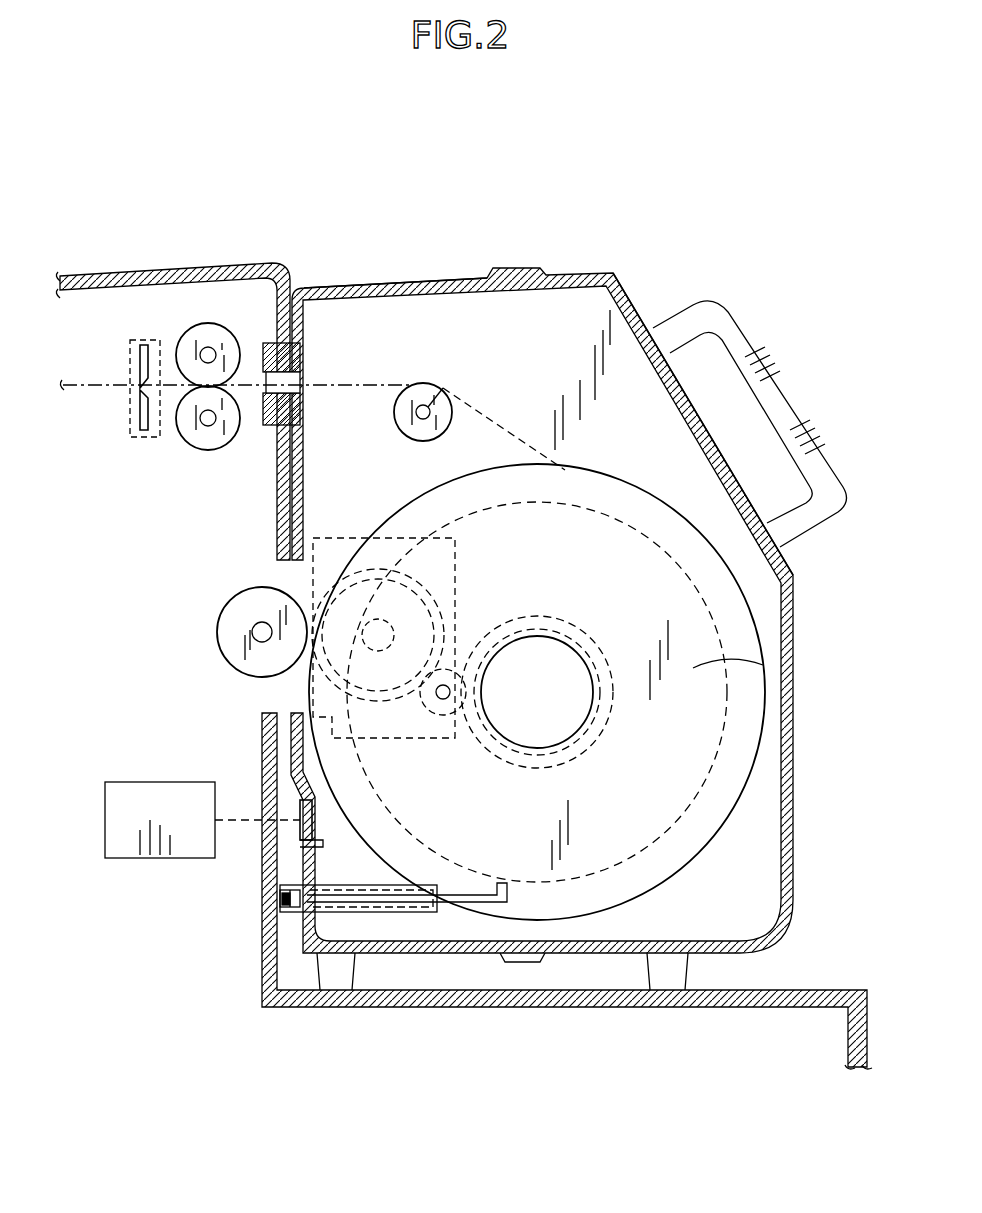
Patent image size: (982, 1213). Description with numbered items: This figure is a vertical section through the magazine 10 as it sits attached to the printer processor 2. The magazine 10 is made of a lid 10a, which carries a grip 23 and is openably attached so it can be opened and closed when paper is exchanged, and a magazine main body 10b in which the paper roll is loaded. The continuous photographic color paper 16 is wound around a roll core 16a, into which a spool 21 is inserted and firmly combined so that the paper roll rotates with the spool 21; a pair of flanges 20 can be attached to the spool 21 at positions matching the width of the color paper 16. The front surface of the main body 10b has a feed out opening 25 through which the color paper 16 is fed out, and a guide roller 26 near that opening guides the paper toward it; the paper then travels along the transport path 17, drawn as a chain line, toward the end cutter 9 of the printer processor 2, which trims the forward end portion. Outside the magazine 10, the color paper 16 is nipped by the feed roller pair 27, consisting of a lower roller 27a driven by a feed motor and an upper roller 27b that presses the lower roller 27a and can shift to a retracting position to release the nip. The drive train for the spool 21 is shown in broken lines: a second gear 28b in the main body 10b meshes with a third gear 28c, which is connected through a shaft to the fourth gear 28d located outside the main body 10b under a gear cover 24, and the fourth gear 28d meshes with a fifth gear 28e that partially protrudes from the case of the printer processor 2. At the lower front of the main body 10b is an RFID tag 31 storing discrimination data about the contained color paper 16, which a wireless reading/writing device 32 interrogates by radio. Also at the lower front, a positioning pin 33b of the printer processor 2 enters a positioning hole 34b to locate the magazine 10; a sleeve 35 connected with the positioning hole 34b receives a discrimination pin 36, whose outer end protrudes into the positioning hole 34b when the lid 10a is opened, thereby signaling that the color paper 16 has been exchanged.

The printer processor 2 is at (72, 208).
The end cutter 9 is at (147, 437).
The magazine 10 is at (435, 273).
The lid 10a is at (625, 278).
The magazine main body 10b is at (355, 289).
The color paper 16 is at (763, 665).
The roll core 16a is at (600, 730).
The transport path 17 is at (93, 388).
The flanges 20 is at (697, 830).
The spool 21 is at (563, 667).
The grip 23 is at (753, 340).
The gear cover 24 is at (348, 538).
The feed out opening 25 is at (296, 380).
The guide roller 26 is at (433, 383).
The feed roller pair 27 is at (205, 322).
The lower roller 27a is at (197, 447).
The upper roller 27b is at (192, 337).
The second gear 28b is at (447, 723).
The third gear 28c is at (447, 612).
The fourth gear 28d is at (433, 575).
The fifth gear 28e is at (223, 632).
The RFID tag 31 is at (298, 845).
The wireless reading/writing device 32 is at (158, 782).
The positioning pin 33b is at (280, 900).
The positioning hole 34b is at (287, 907).
The sleeve 35 is at (363, 912).
The discrimination pin 36 is at (470, 902).